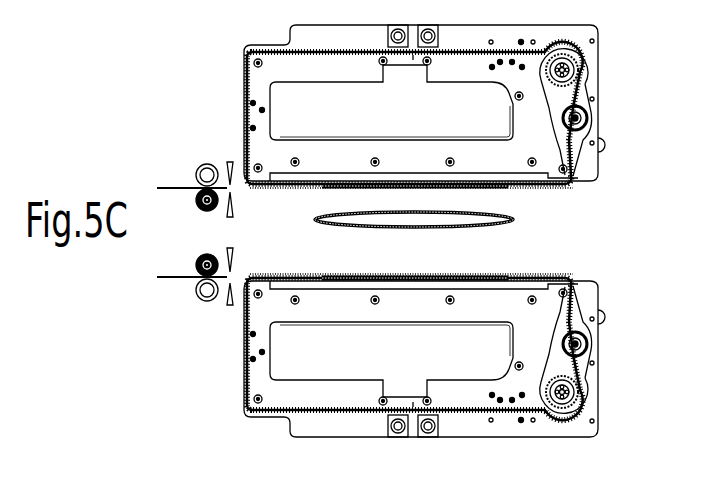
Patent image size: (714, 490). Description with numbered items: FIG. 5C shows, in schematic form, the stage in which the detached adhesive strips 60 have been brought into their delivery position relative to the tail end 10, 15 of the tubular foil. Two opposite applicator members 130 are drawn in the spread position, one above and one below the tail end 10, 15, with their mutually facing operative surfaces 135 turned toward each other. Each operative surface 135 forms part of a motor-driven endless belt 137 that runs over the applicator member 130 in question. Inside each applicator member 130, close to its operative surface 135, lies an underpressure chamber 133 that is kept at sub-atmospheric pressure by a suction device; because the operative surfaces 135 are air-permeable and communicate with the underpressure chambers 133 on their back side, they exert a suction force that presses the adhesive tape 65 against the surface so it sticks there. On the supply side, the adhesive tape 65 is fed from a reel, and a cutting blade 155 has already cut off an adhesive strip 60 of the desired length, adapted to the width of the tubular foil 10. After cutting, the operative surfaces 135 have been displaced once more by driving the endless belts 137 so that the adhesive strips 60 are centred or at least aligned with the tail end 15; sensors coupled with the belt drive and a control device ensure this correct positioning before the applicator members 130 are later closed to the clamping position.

The applicator member 130 is at (592, 64).
The underpressure chamber 133 is at (573, 182).
The operative surface 135 is at (520, 187).
The endless belt 137 is at (243, 82).
The adhesive strip 60 is at (322, 186).
The adhesive tape 65 is at (157, 188).
The cutting blade 155 is at (227, 163).
The tubular foil 10 is at (414, 235).
The tail end 15 is at (397, 227).